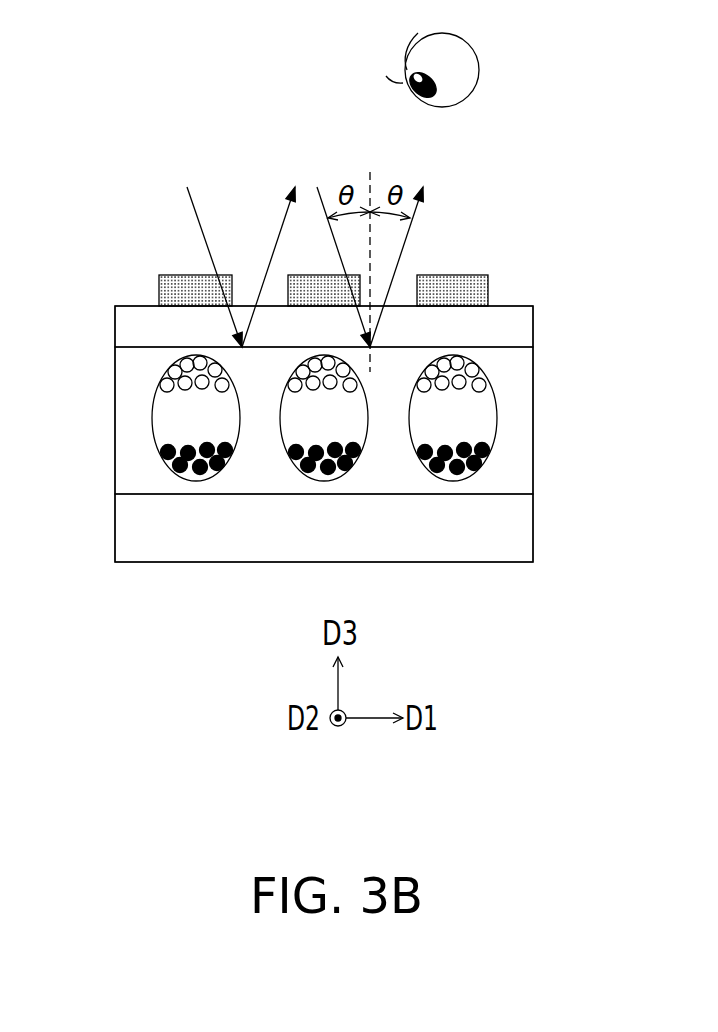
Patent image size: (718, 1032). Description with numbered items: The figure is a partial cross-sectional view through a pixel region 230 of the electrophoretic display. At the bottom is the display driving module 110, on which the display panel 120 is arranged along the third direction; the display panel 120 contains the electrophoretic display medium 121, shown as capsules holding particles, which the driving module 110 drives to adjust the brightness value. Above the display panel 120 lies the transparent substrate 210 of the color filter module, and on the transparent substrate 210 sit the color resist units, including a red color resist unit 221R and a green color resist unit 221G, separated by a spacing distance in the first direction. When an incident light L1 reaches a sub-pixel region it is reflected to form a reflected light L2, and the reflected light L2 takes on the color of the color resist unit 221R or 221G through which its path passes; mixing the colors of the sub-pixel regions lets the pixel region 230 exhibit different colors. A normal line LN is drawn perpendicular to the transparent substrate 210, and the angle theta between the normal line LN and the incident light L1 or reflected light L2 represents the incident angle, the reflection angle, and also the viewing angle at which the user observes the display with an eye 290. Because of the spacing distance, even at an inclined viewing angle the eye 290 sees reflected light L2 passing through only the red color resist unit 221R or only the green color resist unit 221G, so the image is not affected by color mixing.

The eye 290 is at (480, 70).
The red color resist unit 221R is at (170, 273).
The green color resist unit 221G is at (313, 275).
The transparent substrate 210 is at (533, 330).
The display panel 120 is at (533, 380).
The electrophoretic display medium 121 is at (490, 455).
The display driving module 110 is at (533, 527).
The pixel region 230 is at (407, 478).
The incident light L1 is at (213, 257).
The reflected light L2 is at (265, 258).
The normal line LN is at (378, 172).